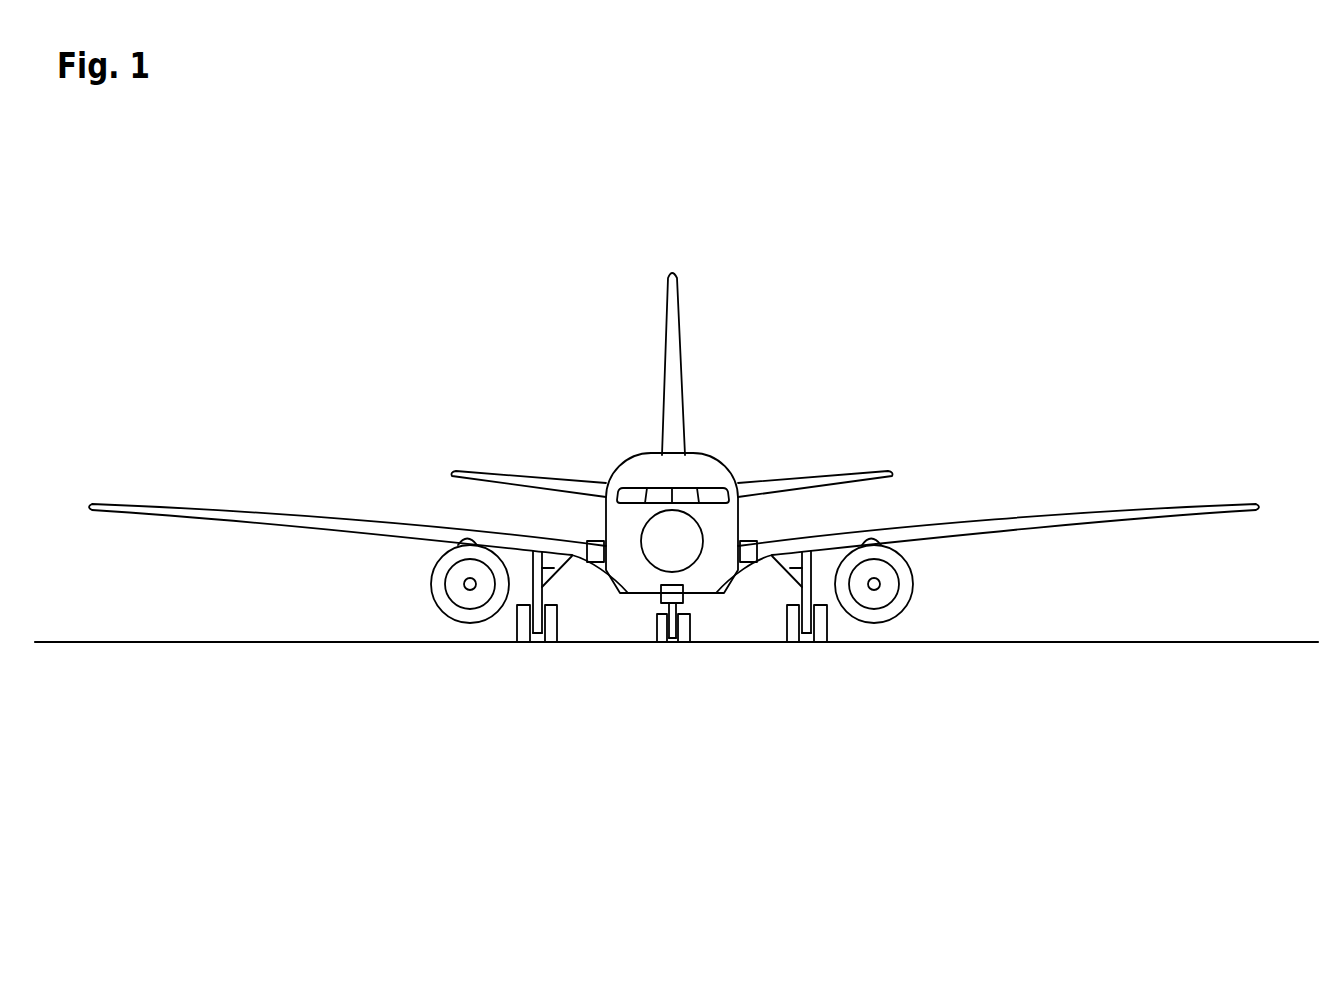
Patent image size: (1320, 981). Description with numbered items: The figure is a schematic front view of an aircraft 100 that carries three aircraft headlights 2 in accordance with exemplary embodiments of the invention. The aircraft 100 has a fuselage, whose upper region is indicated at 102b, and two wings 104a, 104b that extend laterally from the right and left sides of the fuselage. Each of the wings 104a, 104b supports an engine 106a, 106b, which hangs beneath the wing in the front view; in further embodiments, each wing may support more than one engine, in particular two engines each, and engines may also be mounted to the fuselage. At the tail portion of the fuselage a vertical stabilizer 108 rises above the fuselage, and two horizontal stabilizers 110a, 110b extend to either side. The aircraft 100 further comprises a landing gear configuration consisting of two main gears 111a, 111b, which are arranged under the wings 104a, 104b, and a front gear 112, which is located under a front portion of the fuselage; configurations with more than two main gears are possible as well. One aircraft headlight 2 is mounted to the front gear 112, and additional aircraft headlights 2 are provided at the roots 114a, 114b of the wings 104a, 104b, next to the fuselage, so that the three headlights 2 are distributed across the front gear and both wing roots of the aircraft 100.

The aircraft 100 is at (928, 250).
The fuselage upper region 102b is at (700, 460).
The wing 104a is at (170, 490).
The wing 104b is at (1175, 490).
The engine 106a is at (432, 622).
The engine 106b is at (912, 622).
The vertical stabilizer 108 is at (700, 280).
The horizontal stabilizer 110a is at (502, 463).
The horizontal stabilizer 110b is at (842, 463).
The main gear 111a is at (524, 668).
The main gear 111b is at (822, 668).
The front gear 112 is at (650, 636).
The wing root 114a is at (596, 578).
The wing root 114b is at (750, 578).
The aircraft headlight 2 is at (590, 545).